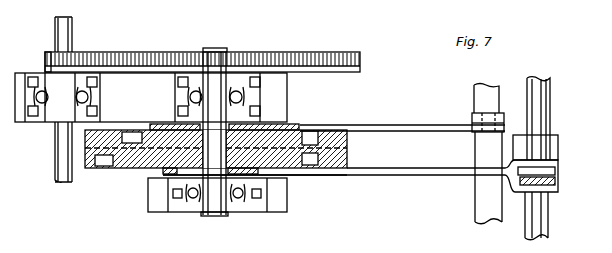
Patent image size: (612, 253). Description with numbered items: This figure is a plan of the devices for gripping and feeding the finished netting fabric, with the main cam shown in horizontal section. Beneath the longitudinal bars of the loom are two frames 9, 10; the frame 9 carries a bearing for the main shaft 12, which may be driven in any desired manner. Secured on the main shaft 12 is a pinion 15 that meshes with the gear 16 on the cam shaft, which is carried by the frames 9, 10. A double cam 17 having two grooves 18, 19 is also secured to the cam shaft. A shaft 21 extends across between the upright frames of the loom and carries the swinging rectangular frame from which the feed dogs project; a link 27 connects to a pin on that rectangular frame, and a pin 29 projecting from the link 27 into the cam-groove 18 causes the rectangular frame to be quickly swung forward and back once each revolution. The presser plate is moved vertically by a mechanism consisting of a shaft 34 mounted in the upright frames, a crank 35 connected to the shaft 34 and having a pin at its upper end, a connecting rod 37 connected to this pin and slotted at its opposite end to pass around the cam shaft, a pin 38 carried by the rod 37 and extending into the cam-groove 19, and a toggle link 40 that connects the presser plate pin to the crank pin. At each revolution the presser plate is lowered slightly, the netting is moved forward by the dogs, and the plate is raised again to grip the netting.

The main shaft 12 is at (58, 31).
The pinion 15 is at (46, 61).
The gear 16 is at (148, 60).
The frame 9 is at (151, 133).
The cam-groove 18 is at (128, 137).
The cam-groove 19 is at (105, 166).
The double cam 17 is at (336, 148).
The pin 29 is at (315, 135).
The pin 38 is at (308, 168).
The frame 10 is at (183, 206).
The link 27 is at (397, 129).
The connecting rod 37 is at (404, 172).
The shaft 21 is at (484, 90).
The shaft 34 is at (540, 100).
The crank 35 is at (547, 171).
The toggle link 40 is at (556, 182).